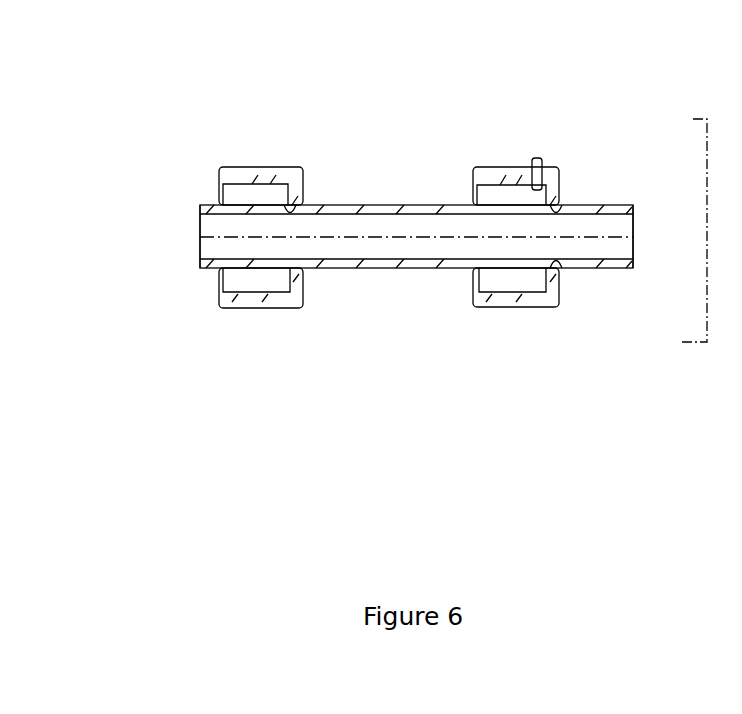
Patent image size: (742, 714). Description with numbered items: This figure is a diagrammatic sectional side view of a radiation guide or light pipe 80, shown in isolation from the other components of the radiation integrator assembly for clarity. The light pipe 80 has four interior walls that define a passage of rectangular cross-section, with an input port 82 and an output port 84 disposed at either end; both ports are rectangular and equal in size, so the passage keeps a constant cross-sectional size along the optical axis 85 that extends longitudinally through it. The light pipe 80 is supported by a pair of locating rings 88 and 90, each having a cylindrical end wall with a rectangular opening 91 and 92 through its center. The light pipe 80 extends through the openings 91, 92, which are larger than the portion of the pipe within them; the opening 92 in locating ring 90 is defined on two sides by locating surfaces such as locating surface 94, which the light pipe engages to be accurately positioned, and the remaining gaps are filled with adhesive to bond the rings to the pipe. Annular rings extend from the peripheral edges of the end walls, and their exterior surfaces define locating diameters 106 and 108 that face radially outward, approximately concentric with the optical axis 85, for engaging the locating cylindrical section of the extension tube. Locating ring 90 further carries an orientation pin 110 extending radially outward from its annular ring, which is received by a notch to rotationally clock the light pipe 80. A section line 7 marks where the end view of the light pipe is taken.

The light pipe 80 is at (380, 205).
The input port 82 is at (633, 246).
The output port 84 is at (196, 245).
The optical axis 85 is at (345, 233).
The locating ring 88 is at (280, 298).
The locating ring 90 is at (493, 295).
The rectangular opening 91 is at (287, 212).
The rectangular opening 92 is at (558, 212).
The locating surface 94 is at (558, 262).
The locating diameter 106 is at (242, 167).
The locating diameter 108 is at (497, 167).
The orientation pin 110 is at (537, 158).
The line 7- 7 is at (677, 238).